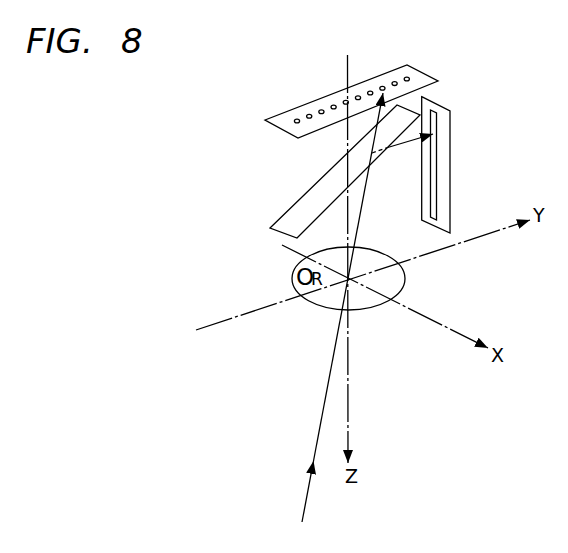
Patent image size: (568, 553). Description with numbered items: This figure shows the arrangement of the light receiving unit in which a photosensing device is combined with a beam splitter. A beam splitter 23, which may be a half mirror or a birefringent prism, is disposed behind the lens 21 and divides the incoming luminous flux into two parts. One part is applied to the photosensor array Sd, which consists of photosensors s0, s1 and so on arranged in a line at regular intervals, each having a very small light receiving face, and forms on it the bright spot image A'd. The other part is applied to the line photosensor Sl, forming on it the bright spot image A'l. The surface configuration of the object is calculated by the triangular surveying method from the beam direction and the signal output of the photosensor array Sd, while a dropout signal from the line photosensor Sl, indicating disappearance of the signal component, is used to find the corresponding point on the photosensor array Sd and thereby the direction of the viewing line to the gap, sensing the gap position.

The lens 21 is at (405, 283).
The beam splitter 23 is at (290, 205).
The photosensor array Sd is at (358, 93).
The photosensor s0 is at (295, 119).
The photosensor s1 is at (309, 114).
The bright spot image A'd is at (390, 56).
The line photosensor Sl is at (451, 119).
The bright spot image A'l is at (410, 165).